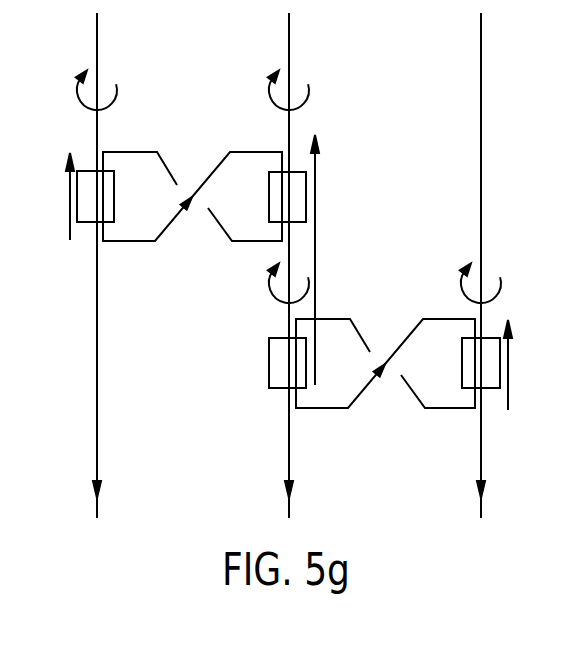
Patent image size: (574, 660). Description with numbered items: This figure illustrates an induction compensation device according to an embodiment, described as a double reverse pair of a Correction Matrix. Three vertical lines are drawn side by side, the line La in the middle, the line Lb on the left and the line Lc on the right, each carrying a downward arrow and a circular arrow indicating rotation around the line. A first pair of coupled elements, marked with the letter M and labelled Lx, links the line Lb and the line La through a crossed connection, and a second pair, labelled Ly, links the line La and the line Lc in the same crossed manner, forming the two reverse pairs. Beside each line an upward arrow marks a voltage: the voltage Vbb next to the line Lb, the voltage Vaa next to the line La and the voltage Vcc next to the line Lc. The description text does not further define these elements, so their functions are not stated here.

The line conductor b Lb is at (102, 265).
The line conductor a La is at (293, 265).
The line conductor c Lc is at (485, 265).
The mutual inductance coupling x Lx is at (191, 198).
The mutual inductance coupling y Ly is at (384, 366).
The voltage Vbb' Vbb is at (51, 196).
The voltage Vaa' Vaa is at (335, 260).
The voltage Vcc' Vcc is at (528, 365).